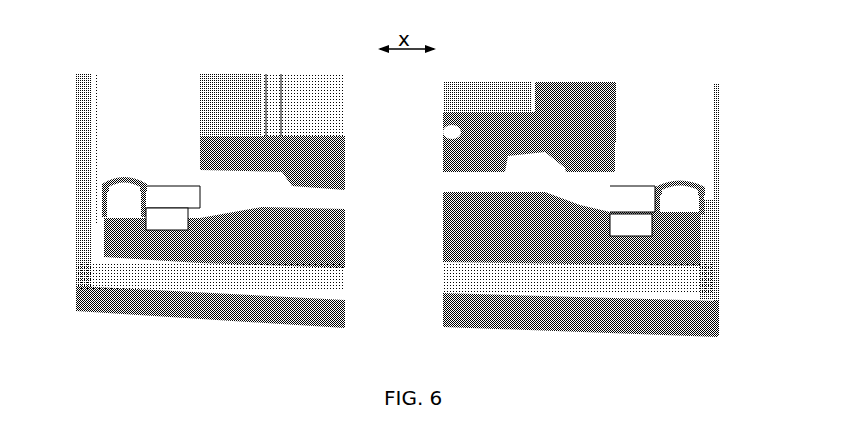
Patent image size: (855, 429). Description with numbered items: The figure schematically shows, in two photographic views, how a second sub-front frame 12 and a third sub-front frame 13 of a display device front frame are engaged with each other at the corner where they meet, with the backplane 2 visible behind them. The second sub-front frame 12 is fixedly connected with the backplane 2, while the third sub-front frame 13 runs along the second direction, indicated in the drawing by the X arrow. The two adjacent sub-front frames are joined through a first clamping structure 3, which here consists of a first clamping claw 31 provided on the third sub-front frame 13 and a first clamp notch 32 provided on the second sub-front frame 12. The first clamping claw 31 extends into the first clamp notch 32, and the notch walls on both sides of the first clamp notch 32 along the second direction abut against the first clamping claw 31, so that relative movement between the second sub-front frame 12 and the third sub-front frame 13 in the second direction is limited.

The backplane 2 is at (313, 86).
The first clamping structure 3 is at (140, 173).
The second sub-front frame 12 is at (280, 322).
The third sub-front frame 13 is at (110, 92).
The first clamping claw 31 is at (170, 185).
The first clamp notch 32 is at (176, 233).